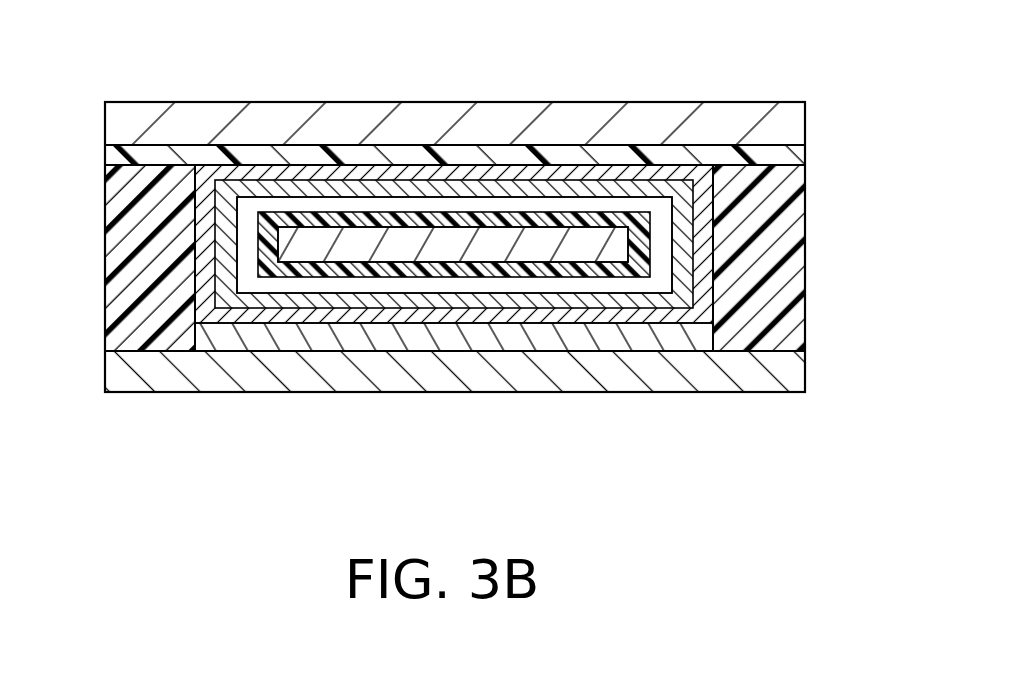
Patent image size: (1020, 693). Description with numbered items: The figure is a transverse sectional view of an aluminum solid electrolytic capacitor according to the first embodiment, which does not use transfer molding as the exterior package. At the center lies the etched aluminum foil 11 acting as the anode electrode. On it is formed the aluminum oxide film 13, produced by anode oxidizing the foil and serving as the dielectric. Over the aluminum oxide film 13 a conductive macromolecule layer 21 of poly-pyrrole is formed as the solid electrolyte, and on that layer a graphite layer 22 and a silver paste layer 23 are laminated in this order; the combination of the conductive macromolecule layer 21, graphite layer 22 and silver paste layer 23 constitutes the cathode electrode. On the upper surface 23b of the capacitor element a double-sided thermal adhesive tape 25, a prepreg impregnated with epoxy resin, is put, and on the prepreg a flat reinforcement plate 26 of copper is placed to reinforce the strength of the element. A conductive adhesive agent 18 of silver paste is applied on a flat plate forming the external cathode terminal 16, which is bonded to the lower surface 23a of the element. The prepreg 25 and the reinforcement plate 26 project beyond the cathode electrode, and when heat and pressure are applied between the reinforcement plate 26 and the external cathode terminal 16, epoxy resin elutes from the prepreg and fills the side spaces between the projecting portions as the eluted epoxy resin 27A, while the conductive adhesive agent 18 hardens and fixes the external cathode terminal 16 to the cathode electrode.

The aluminum foil 11 is at (371, 245).
The aluminum oxide film 13 is at (520, 215).
The external cathode terminal 16 is at (498, 373).
The conductive adhesive agent 18 is at (243, 338).
The conductive macromolecule layer 21 is at (437, 205).
The graphite layer 22 is at (356, 190).
The silver paste layer 23 is at (278, 172).
The lower surface 23a is at (624, 322).
The upper surface 23b is at (602, 175).
The double-sided thermal adhesive tape 25 is at (704, 153).
The reinforcement plate 26 is at (187, 128).
The eluted epoxy resin 27A is at (126, 246).